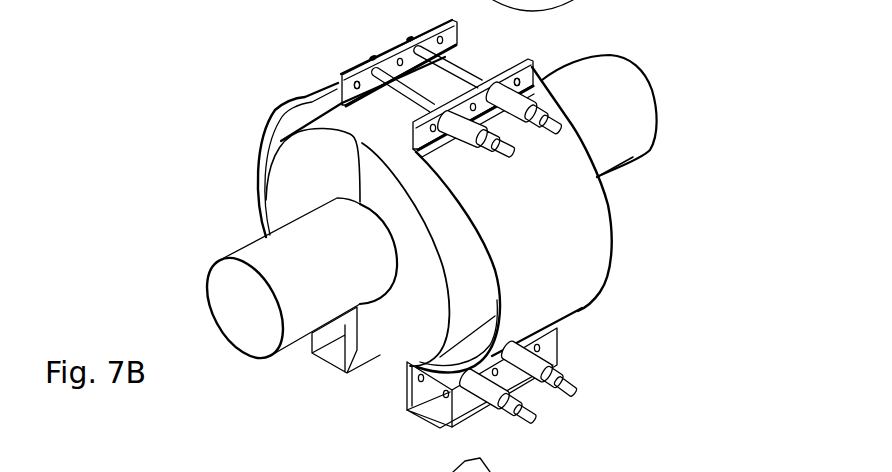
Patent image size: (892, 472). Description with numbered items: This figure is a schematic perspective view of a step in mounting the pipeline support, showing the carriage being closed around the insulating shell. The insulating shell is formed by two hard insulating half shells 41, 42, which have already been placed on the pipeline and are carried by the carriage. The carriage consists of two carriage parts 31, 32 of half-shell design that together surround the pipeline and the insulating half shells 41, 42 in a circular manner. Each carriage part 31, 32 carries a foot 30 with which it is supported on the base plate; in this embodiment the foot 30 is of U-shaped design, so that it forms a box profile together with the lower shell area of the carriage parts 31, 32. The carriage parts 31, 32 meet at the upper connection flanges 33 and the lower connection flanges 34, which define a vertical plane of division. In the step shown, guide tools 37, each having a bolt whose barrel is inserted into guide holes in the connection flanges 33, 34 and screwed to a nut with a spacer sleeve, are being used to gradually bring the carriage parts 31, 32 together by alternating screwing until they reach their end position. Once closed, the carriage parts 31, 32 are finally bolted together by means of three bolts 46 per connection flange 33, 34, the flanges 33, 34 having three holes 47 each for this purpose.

The foot 30 is at (585, 316).
The carriage part 31 is at (333, 87).
The carriage part 32 is at (573, 257).
The upper connection flange 33 is at (545, 75).
The lower connection flange 34 is at (543, 354).
The guide tool 37 is at (585, 125).
The insulating half shell 41 is at (287, 180).
The insulating half shell 42 is at (403, 327).
The bolt 46 is at (598, 471).
The hole 47 is at (357, 83).